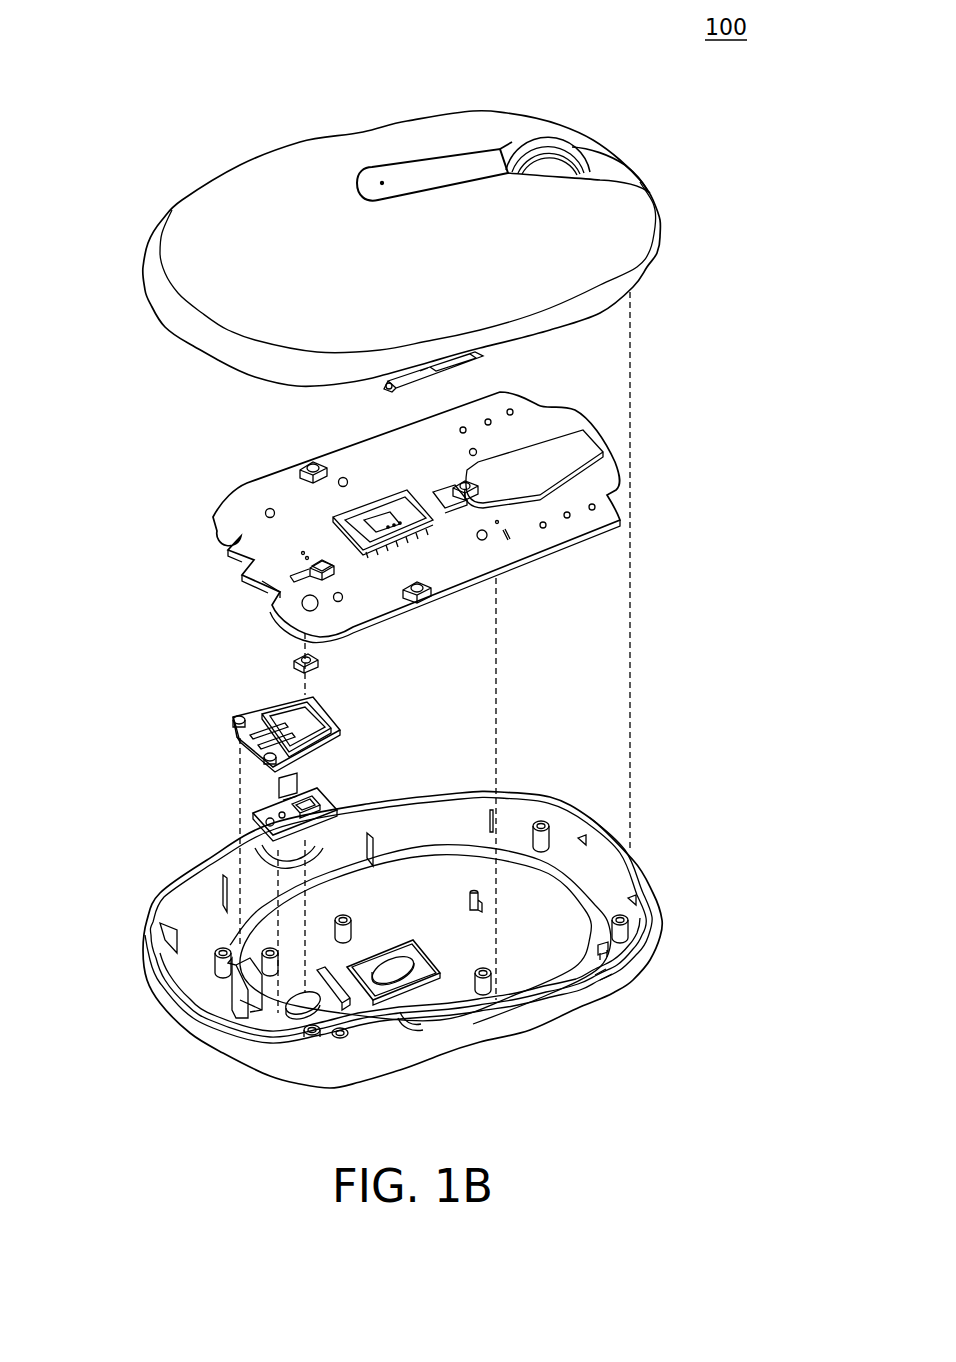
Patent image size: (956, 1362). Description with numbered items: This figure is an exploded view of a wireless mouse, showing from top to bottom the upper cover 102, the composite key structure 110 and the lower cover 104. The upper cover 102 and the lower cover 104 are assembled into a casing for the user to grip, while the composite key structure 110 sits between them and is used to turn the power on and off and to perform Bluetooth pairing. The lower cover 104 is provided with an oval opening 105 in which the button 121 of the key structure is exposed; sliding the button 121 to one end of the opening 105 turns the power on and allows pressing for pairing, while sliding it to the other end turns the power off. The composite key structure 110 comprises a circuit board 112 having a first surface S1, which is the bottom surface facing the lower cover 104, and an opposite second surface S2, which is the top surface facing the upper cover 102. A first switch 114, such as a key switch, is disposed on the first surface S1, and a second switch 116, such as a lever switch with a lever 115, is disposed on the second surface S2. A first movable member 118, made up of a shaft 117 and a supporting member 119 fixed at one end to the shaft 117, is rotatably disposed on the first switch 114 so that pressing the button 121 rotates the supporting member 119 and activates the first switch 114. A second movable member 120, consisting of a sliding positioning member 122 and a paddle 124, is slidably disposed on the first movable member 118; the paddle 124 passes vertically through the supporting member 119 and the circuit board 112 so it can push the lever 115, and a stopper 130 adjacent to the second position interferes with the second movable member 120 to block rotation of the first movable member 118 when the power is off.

The upper cover 102 is at (168, 327).
The lower cover 104 is at (158, 1003).
The opening 105 is at (309, 1005).
The composite key structure 110 is at (103, 518).
The circuit board 112 is at (213, 517).
The first switch 114 is at (293, 663).
The lever 115 is at (321, 566).
The second switch 116 is at (262, 584).
The shaft 117 is at (240, 718).
The first movable member 118 is at (218, 723).
The supporting member 119 is at (292, 699).
The second movable member 120 is at (253, 820).
The button 121 is at (308, 823).
The sliding positioning member 122 is at (318, 797).
The paddle 124 is at (300, 789).
The stopper 130 is at (380, 997).
The first surface S1 is at (377, 627).
The second surface S2 is at (243, 510).